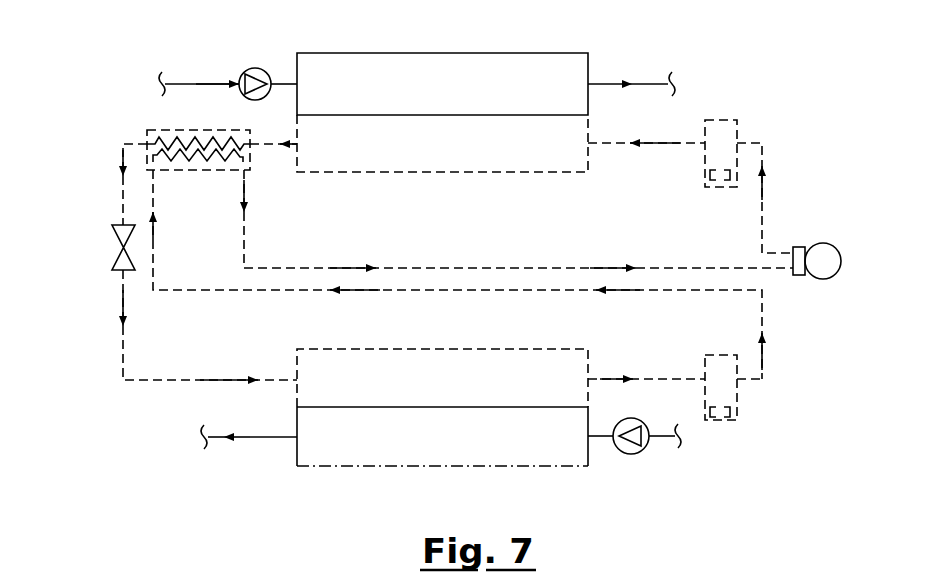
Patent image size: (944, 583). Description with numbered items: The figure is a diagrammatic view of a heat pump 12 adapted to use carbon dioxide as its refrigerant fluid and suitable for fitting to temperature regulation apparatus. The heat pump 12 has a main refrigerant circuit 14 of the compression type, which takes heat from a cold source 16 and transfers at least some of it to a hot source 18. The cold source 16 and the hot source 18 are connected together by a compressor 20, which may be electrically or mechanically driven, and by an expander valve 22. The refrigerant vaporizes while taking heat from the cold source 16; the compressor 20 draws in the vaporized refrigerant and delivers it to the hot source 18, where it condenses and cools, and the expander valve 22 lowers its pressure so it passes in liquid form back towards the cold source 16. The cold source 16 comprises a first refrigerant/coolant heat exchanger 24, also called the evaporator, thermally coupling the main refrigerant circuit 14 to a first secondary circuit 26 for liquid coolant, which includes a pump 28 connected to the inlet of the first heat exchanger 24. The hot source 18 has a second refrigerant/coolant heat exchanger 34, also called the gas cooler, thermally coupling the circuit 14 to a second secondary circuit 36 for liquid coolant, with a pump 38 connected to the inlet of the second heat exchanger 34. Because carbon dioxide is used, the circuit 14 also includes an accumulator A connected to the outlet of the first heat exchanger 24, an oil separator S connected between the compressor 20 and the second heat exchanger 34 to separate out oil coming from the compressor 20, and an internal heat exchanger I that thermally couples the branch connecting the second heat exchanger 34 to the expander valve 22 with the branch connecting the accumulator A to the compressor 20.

The heat pump 12 is at (790, 218).
The main refrigerant circuit 14 is at (762, 352).
The cold source 16 is at (447, 346).
The hot source 18 is at (450, 177).
The compressor 20 is at (834, 279).
The expander valve 22 is at (118, 238).
The first refrigerant/coolant heat exchanger 24 is at (442, 436).
The first secondary circuit 26 is at (274, 440).
The pump 28 is at (625, 454).
The second refrigerant/coolant heat exchanger 34 is at (442, 84).
The second secondary circuit 36 is at (600, 82).
The pump 38 is at (262, 68).
The oil separator S is at (737, 130).
The accumulator A is at (725, 390).
The internal heat exchanger I is at (156, 128).